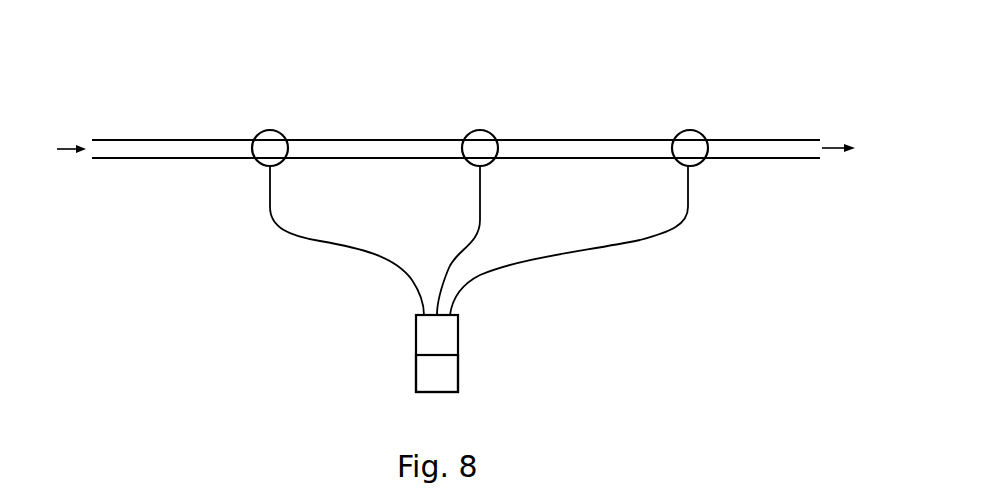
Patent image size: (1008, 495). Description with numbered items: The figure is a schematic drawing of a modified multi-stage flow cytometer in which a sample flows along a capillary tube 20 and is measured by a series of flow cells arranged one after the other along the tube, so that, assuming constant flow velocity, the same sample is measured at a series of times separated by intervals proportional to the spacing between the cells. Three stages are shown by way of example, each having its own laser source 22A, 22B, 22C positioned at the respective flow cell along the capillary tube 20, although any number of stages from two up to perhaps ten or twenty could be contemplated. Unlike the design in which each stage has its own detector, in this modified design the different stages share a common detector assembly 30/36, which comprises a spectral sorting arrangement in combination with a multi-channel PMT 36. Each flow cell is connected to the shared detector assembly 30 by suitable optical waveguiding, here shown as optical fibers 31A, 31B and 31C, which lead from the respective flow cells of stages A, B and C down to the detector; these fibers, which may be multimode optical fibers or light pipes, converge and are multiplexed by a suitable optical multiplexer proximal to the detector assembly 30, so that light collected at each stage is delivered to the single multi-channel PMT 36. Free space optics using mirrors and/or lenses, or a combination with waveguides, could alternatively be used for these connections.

The capillary tube 20 is at (127, 140).
The laser source 22A is at (280, 131).
The laser source 22B is at (486, 131).
The laser source 22C is at (699, 131).
The optical fiber 31A is at (340, 246).
The optical fiber 31B is at (482, 183).
The optical fiber 31C is at (568, 248).
The detector assembly 30 is at (460, 325).
The multi-channel PMT 36 is at (460, 368).